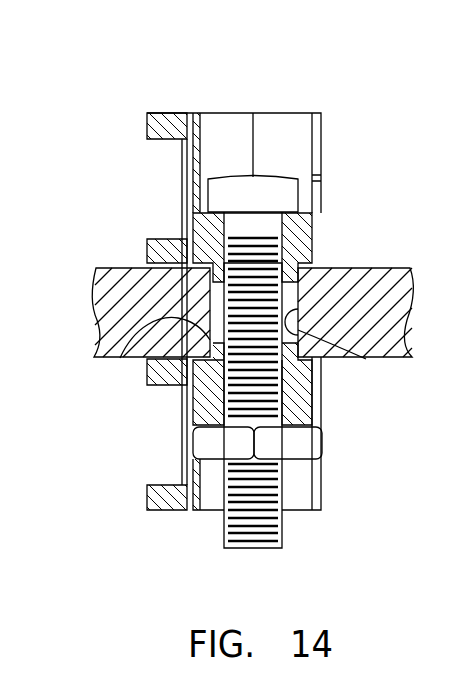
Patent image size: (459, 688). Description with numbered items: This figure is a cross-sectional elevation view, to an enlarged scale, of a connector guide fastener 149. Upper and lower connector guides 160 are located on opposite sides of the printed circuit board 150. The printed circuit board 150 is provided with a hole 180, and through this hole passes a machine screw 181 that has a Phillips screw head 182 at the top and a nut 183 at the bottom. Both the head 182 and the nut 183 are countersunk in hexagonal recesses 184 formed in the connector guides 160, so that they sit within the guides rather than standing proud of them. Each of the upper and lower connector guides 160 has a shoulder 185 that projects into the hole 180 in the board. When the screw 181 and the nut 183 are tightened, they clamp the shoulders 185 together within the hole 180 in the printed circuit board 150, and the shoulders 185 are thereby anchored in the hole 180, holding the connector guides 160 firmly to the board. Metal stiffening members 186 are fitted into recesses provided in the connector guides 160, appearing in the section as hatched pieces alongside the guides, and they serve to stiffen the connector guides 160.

The fastener 149 is at (185, 72).
The printed circuit board 150 is at (110, 267).
The connector guides 160 is at (163, 113).
The hole 180 is at (366, 359).
The machine screw 181 is at (267, 548).
The Phillips screw head 182 is at (287, 197).
The nut 183 is at (312, 445).
The hexagonal recesses 184 is at (298, 125).
The shoulder 185 is at (300, 292).
The metal stiffening members 186 is at (317, 152).